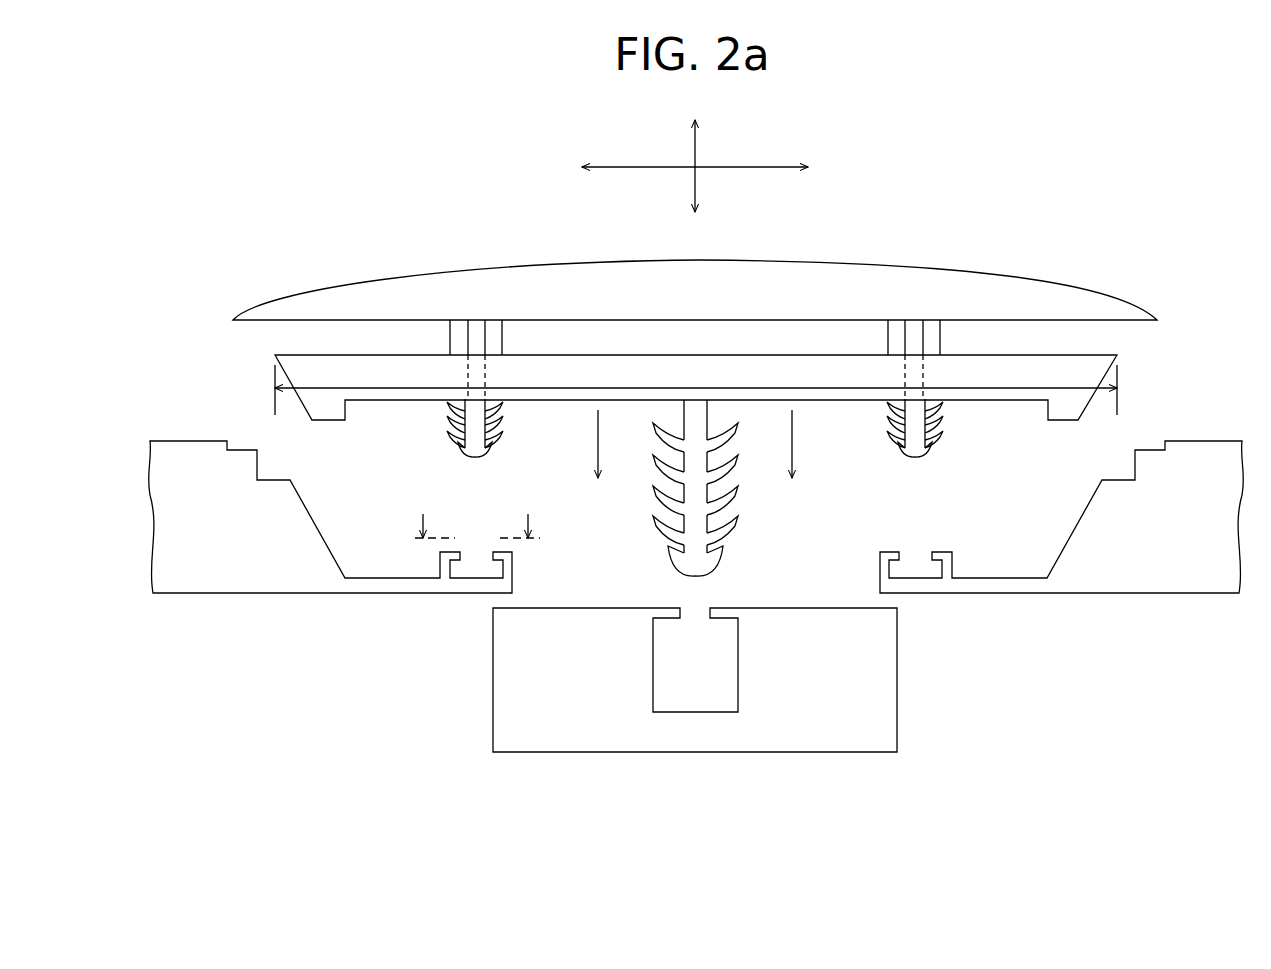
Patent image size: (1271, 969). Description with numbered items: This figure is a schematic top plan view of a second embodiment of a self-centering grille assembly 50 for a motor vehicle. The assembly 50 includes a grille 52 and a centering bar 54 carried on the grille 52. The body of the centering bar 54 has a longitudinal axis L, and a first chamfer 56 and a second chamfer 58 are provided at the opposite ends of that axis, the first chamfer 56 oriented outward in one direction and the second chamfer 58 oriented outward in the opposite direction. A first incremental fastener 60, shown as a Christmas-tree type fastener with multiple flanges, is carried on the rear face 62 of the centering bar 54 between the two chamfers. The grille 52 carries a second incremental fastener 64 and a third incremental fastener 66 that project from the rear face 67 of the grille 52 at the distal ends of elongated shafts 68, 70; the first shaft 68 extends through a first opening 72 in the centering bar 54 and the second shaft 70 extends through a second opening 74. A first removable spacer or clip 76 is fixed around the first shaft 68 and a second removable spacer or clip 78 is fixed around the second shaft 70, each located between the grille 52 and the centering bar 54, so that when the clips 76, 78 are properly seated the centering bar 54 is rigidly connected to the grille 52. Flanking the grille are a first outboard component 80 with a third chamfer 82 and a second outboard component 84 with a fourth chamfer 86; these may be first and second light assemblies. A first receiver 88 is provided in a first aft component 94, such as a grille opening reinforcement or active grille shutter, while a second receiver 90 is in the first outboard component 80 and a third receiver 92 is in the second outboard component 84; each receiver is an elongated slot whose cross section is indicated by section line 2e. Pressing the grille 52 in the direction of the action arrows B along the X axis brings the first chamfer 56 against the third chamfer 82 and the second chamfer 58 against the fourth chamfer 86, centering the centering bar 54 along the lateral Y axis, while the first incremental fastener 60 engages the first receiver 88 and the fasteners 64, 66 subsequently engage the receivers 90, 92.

The self-centering grille assembly 50 is at (1018, 228).
The grille 52 is at (430, 275).
The centering bar 54 is at (842, 363).
The first chamfer 56 is at (302, 408).
The second chamfer 58 is at (1090, 405).
The first incremental fastener 60 is at (672, 568).
The rear face of the centering bar 62 is at (1000, 400).
The second incremental fastener 64 is at (465, 443).
The third incremental fastener 66 is at (903, 452).
The rear face of the grille 67 is at (605, 328).
The first shaft 68 is at (497, 407).
The second shaft 70 is at (887, 407).
The first opening 72 is at (470, 372).
The second opening 74 is at (920, 372).
The first removable spacer or clip 76 is at (455, 335).
The second removable spacer or clip 78 is at (933, 333).
The first outboard component 80 is at (190, 578).
The third chamfer 82 is at (318, 532).
The second outboard component 84 is at (1185, 575).
The fourth chamfer 86 is at (1072, 535).
The first receiver 88 is at (728, 672).
The second receiver 90 is at (487, 570).
The third receiver 92 is at (890, 570).
The first aft component 94 is at (838, 752).
The longitudinal axis L is at (325, 388).
The X-axis X is at (695, 145).
The Y-axis Y is at (752, 167).
The action arrows B is at (598, 447).
The section line 2e is at (476, 512).